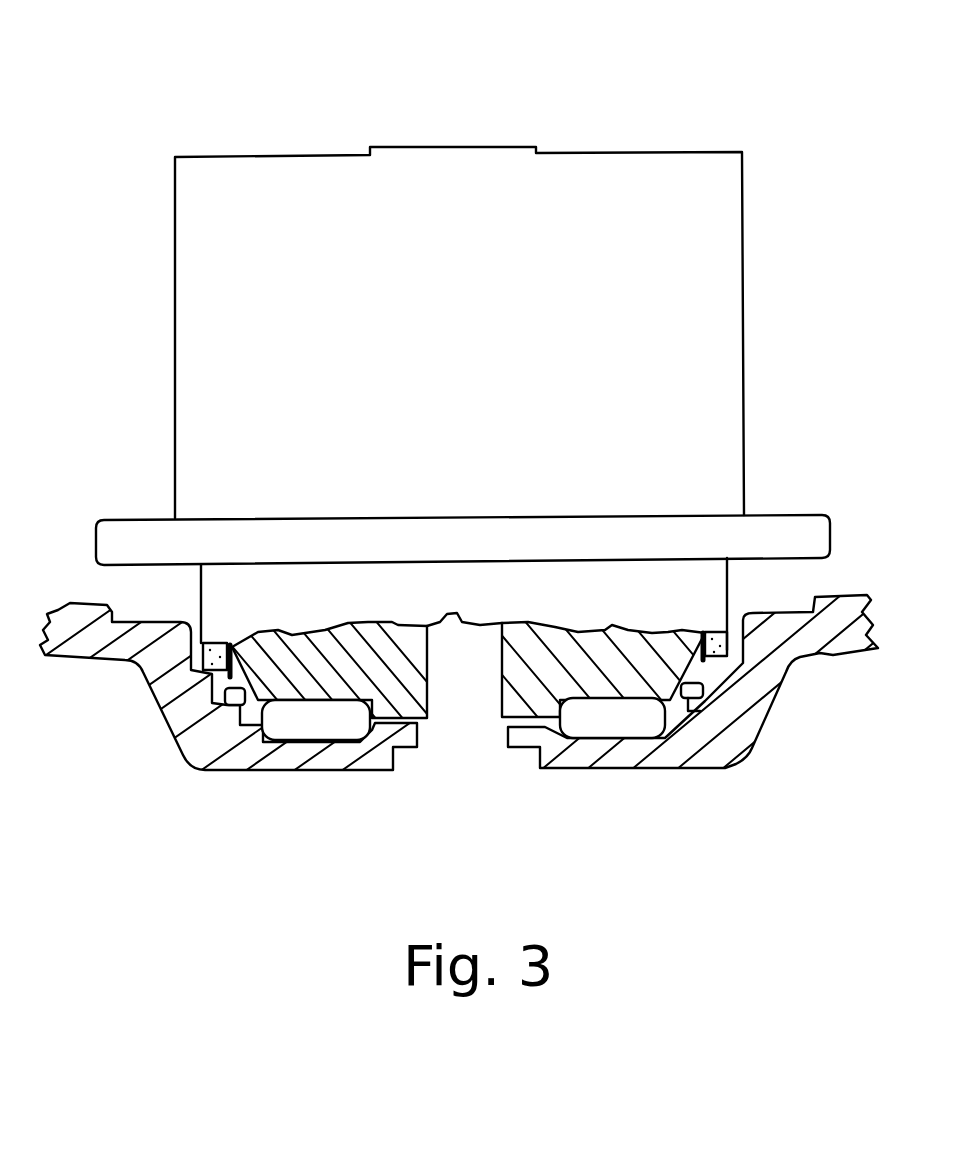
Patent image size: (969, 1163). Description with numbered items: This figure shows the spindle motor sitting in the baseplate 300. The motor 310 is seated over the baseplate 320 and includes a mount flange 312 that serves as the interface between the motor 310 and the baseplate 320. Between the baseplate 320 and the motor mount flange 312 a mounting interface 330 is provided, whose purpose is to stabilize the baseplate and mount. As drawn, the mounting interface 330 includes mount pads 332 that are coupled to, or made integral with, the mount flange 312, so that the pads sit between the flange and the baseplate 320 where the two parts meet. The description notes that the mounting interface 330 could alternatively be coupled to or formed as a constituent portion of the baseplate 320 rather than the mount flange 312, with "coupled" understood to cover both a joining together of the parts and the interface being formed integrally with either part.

The spindle motor sitting in the baseplate 300 is at (518, 80).
The motor 310 is at (704, 289).
The mount flange 312 is at (420, 700).
The baseplate 320 is at (805, 640).
The mounting interface 330 is at (672, 722).
The mount pads 332 is at (266, 718).